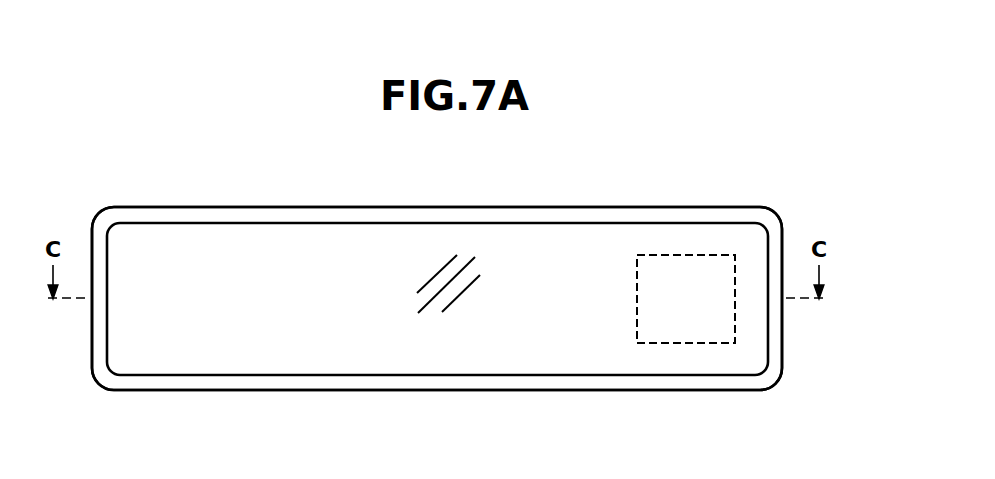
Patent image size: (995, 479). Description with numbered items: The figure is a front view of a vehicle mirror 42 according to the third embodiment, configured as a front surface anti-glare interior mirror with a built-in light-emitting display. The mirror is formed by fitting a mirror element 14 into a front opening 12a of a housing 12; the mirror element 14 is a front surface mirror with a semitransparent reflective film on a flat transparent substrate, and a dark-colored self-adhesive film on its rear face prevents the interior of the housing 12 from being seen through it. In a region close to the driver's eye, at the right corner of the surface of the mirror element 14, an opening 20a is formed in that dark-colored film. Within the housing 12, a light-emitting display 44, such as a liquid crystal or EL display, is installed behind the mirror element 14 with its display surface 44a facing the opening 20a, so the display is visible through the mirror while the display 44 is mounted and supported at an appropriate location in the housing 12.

The vehicle mirror 42 is at (742, 140).
The housing 12 is at (568, 207).
The front opening 12a is at (766, 332).
The mirror element 14 is at (274, 365).
The light-emitting display 44 is at (673, 255).
The opening 20a is at (637, 318).
The display surface 44a is at (700, 325).